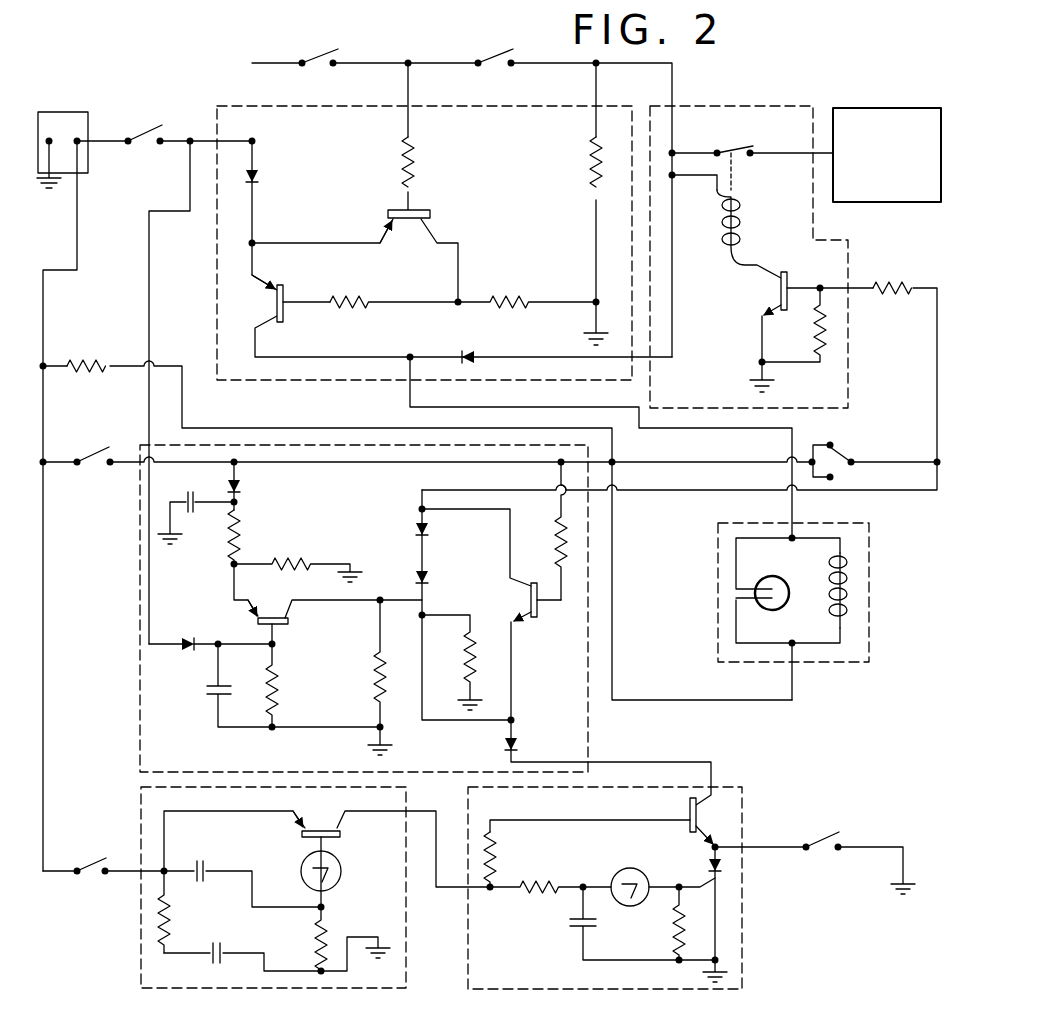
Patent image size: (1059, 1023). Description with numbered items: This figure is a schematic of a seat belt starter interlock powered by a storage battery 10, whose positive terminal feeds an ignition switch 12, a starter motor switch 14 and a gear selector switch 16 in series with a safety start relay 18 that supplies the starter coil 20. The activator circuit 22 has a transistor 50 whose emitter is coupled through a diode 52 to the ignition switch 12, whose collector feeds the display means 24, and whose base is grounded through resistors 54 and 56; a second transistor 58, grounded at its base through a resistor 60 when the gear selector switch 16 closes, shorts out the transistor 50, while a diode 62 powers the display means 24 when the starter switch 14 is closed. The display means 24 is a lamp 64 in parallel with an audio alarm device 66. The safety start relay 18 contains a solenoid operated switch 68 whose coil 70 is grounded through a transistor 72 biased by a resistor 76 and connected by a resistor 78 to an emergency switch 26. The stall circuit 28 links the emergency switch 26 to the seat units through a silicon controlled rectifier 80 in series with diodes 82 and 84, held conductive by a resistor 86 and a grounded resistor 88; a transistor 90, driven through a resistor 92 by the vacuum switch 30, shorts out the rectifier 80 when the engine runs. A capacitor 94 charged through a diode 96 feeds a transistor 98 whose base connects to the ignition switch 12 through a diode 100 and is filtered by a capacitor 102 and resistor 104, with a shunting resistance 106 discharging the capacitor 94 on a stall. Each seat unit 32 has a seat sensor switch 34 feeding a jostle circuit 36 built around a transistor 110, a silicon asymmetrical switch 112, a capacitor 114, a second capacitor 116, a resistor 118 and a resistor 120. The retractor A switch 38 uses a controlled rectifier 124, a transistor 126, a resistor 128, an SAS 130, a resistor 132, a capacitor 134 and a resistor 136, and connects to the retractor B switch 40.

The storage battery 10 is at (60, 118).
The ignition switch 12 is at (148, 128).
The starter motor switch 14 is at (314, 56).
The gear selector switch 16 is at (492, 57).
The safety start relay 18 is at (797, 104).
The starter coil 20 is at (873, 197).
The activator circuit 22 is at (215, 250).
The display means 24 is at (872, 558).
The emergency switch 26 is at (840, 453).
The stall circuit 28 is at (138, 575).
The vacuum switch 30 is at (95, 452).
The seat associated unit 32 is at (112, 818).
The seat sensor switch 34 is at (92, 880).
The jostle circuit 36 is at (138, 925).
The retractor A switch 38 is at (505, 990).
The retractor B switch 40 is at (822, 855).
The transistor 50 is at (266, 318).
The diode 52 is at (260, 172).
The resistor 54 is at (362, 306).
The resistor 56 is at (516, 300).
The second transistor 58 is at (410, 232).
The resistor 60 is at (592, 168).
The diode 62 is at (474, 356).
The lamp 64 is at (774, 590).
The audio alarm device 66 is at (848, 588).
The solenoid operated switch 68 is at (733, 150).
The coil 70 is at (740, 215).
The transistor 72 is at (779, 289).
The biasing resistor 76 is at (817, 328).
The resistor 78 is at (896, 300).
The silicon controlled rectifier 80 is at (430, 578).
The diode 82 is at (430, 530).
The diode 84 is at (518, 745).
The resistor 86 is at (82, 357).
The grounded resistor 88 is at (466, 660).
The transistor 90 is at (538, 616).
The resistor 92 is at (556, 540).
The capacitor 94 is at (196, 524).
The diode 96 is at (244, 487).
The transistor 98 is at (286, 623).
The diode 100 is at (186, 641).
The capacitor 102 is at (207, 702).
The resistor 104 is at (280, 687).
The shunting resistance 106 is at (296, 562).
The transistor 110 is at (305, 834).
The silicon asymmetrical switch 112 is at (342, 870).
The capacitor 114 is at (197, 860).
The second capacitor 116 is at (224, 950).
The resistor 118 is at (170, 912).
The resistor 120 is at (330, 935).
The controlled rectifier 124 is at (710, 862).
The transistor 126 is at (688, 810).
The resistor 128 is at (492, 850).
The silicon asymmetrical switch 130 is at (625, 868).
The resistor 132 is at (520, 896).
The capacitor 134 is at (578, 930).
The resistor 136 is at (672, 920).